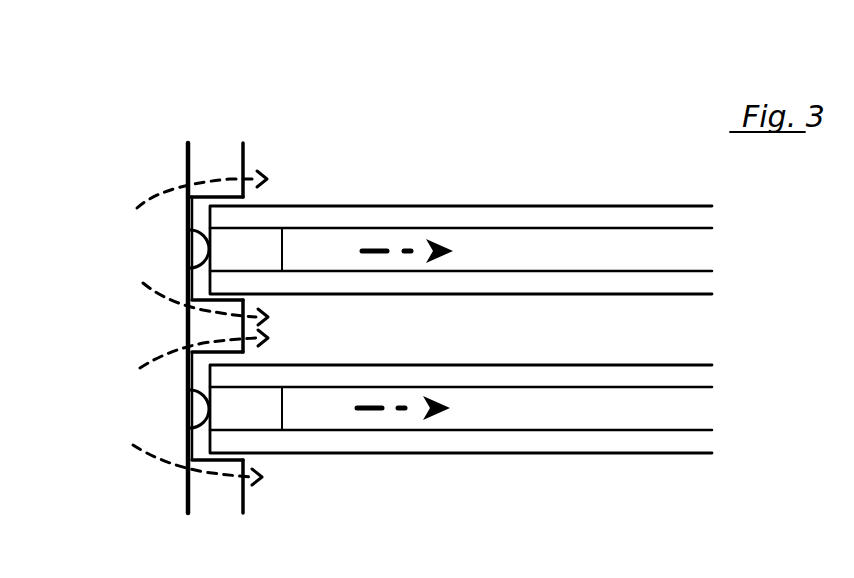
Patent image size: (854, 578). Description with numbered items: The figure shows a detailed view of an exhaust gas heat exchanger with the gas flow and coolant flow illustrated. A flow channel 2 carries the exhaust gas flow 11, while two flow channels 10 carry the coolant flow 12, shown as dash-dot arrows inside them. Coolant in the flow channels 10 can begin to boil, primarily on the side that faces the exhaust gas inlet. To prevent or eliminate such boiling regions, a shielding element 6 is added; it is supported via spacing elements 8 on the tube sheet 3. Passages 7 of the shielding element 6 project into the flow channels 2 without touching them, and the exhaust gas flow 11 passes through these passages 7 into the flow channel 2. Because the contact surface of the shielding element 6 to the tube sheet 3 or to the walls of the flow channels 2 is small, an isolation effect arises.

The flow channel 2 is at (567, 320).
The tube sheet 3 is at (255, 247).
The shielding element 6 is at (183, 155).
The passage 7 is at (187, 305).
The spacing element 8 is at (187, 240).
The flow channel 10 is at (643, 255).
The exhaust gas flow 11 is at (150, 198).
The coolant flow 12 is at (440, 247).